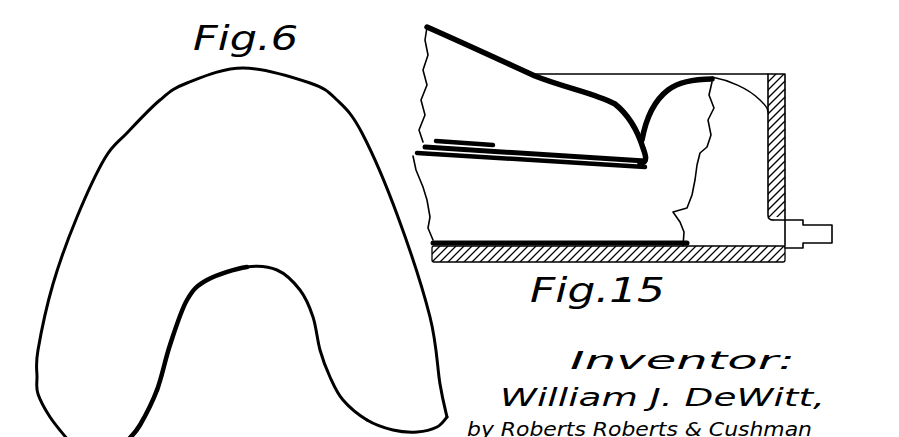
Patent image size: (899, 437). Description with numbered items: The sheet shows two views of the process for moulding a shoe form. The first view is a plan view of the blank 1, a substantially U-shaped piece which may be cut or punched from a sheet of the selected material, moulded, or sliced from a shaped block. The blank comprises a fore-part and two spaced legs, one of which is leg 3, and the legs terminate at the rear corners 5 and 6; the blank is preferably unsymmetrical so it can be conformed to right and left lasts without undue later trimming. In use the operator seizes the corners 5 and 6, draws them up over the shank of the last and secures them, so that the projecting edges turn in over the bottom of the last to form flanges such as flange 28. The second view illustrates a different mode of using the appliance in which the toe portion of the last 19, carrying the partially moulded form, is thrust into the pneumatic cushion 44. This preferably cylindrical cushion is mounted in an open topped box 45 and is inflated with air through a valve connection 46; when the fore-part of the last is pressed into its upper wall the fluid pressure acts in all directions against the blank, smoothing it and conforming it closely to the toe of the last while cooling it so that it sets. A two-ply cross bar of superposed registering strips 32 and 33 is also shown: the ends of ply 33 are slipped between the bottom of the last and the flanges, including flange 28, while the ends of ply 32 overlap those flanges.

In FIG. 6, the blank 1 is at (90, 158).
In FIG. 15, the blank 1 is at (485, 52).
In FIG. 6, the leg 3 is at (262, 343).
In FIG. 6, the corner 5 is at (110, 418).
In FIG. 6, the corner 6 is at (400, 404).
In FIG. 15, the last 19 is at (517, 103).
In FIG. 15, the flange 28 is at (513, 147).
In FIG. 15, the strip 32 is at (473, 141).
In FIG. 15, the strip 33 is at (458, 164).
In FIG. 15, the pneumatic cushion 44 is at (680, 97).
In FIG. 15, the open topped box 45 is at (787, 102).
In FIG. 15, the valve connection 46 is at (793, 227).